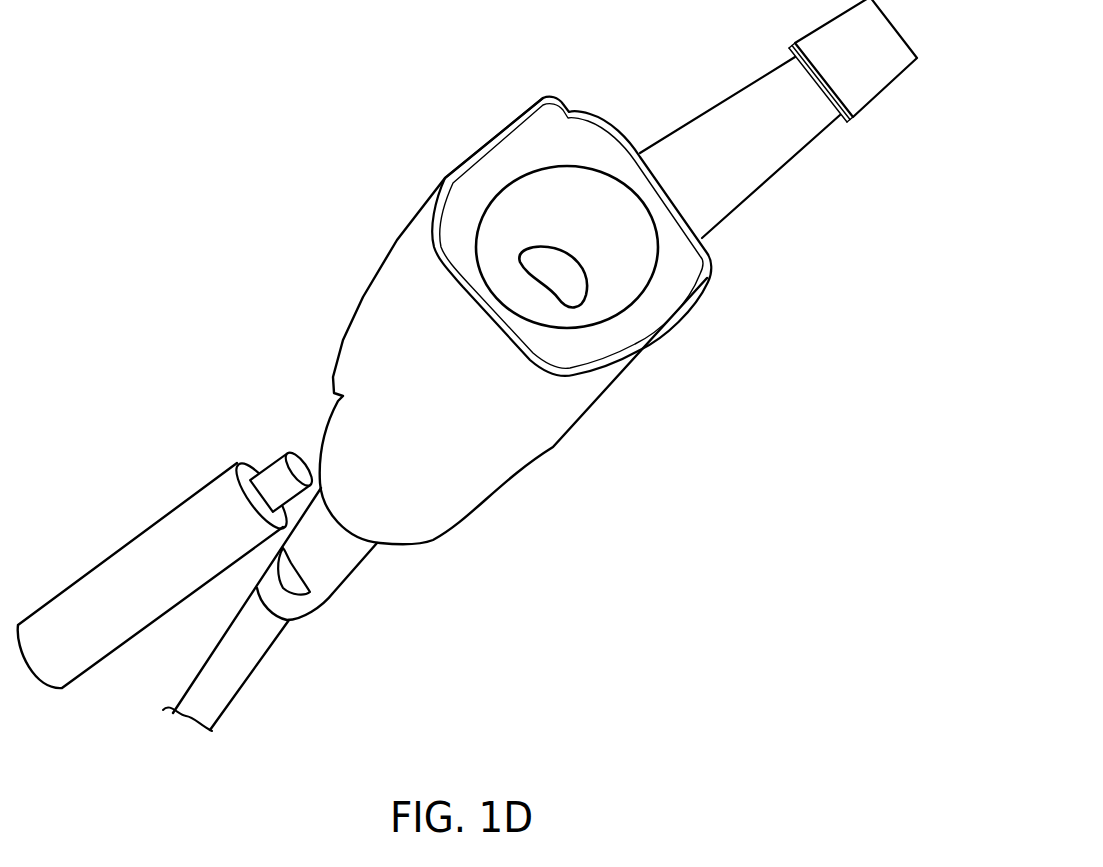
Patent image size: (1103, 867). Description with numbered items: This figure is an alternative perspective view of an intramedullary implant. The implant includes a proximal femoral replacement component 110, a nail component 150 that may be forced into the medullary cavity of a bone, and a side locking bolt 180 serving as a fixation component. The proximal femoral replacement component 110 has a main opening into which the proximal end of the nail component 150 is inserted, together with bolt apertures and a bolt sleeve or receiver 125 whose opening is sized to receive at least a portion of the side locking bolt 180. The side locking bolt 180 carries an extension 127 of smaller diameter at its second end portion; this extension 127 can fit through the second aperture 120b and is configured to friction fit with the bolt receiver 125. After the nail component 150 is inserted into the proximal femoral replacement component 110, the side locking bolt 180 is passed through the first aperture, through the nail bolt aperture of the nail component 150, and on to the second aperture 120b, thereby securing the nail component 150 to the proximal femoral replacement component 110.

The proximal femoral replacement component 110 is at (292, 263).
The second aperture 120b is at (571, 290).
The bolt sleeve or receiver 125 is at (794, 207).
The extension 127 is at (272, 458).
The nail component 150 is at (318, 638).
The side locking bolt 180 is at (97, 525).